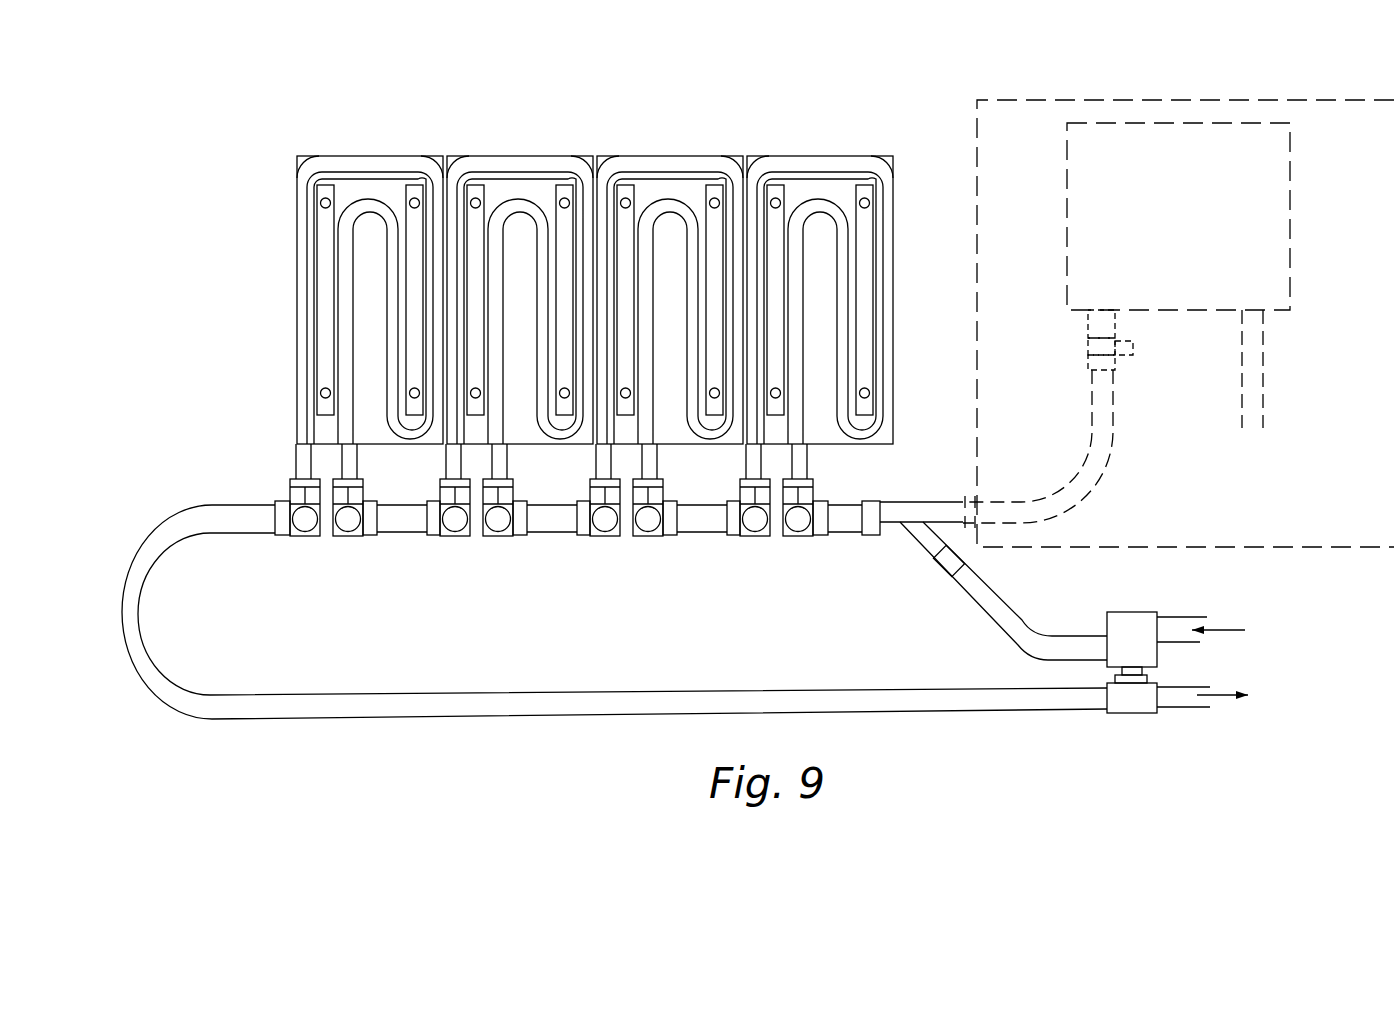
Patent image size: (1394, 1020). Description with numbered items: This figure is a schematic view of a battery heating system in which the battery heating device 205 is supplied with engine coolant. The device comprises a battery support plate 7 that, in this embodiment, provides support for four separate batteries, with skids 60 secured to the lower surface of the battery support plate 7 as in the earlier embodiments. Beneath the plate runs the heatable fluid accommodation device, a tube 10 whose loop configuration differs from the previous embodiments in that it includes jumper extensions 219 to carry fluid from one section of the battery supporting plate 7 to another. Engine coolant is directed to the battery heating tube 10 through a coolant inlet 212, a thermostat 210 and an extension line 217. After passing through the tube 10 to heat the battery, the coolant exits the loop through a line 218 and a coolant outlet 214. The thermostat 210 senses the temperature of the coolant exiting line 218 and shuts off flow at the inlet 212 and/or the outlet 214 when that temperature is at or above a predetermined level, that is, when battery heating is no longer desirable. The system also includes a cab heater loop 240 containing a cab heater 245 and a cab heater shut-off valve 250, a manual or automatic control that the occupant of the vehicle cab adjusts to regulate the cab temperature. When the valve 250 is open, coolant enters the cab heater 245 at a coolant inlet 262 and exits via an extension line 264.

The battery heating device 205 is at (533, 290).
The heatable fluid accommodation device 10 is at (326, 162).
The battery support plate 7 is at (349, 180).
The skid 60 is at (327, 270).
The jumper extension 219 is at (390, 513).
The extension line 217 is at (997, 598).
The line 218 is at (835, 692).
The thermostat 210 is at (1123, 622).
The coolant inlet 212 is at (1195, 643).
The coolant outlet 214 is at (1202, 712).
The cab heater loop 240 is at (1025, 112).
The cab heater 245 is at (1148, 216).
The cab heater shut-off valve 250 is at (1118, 362).
The coolant inlet 262 is at (1253, 425).
The extension line 264 is at (1022, 499).